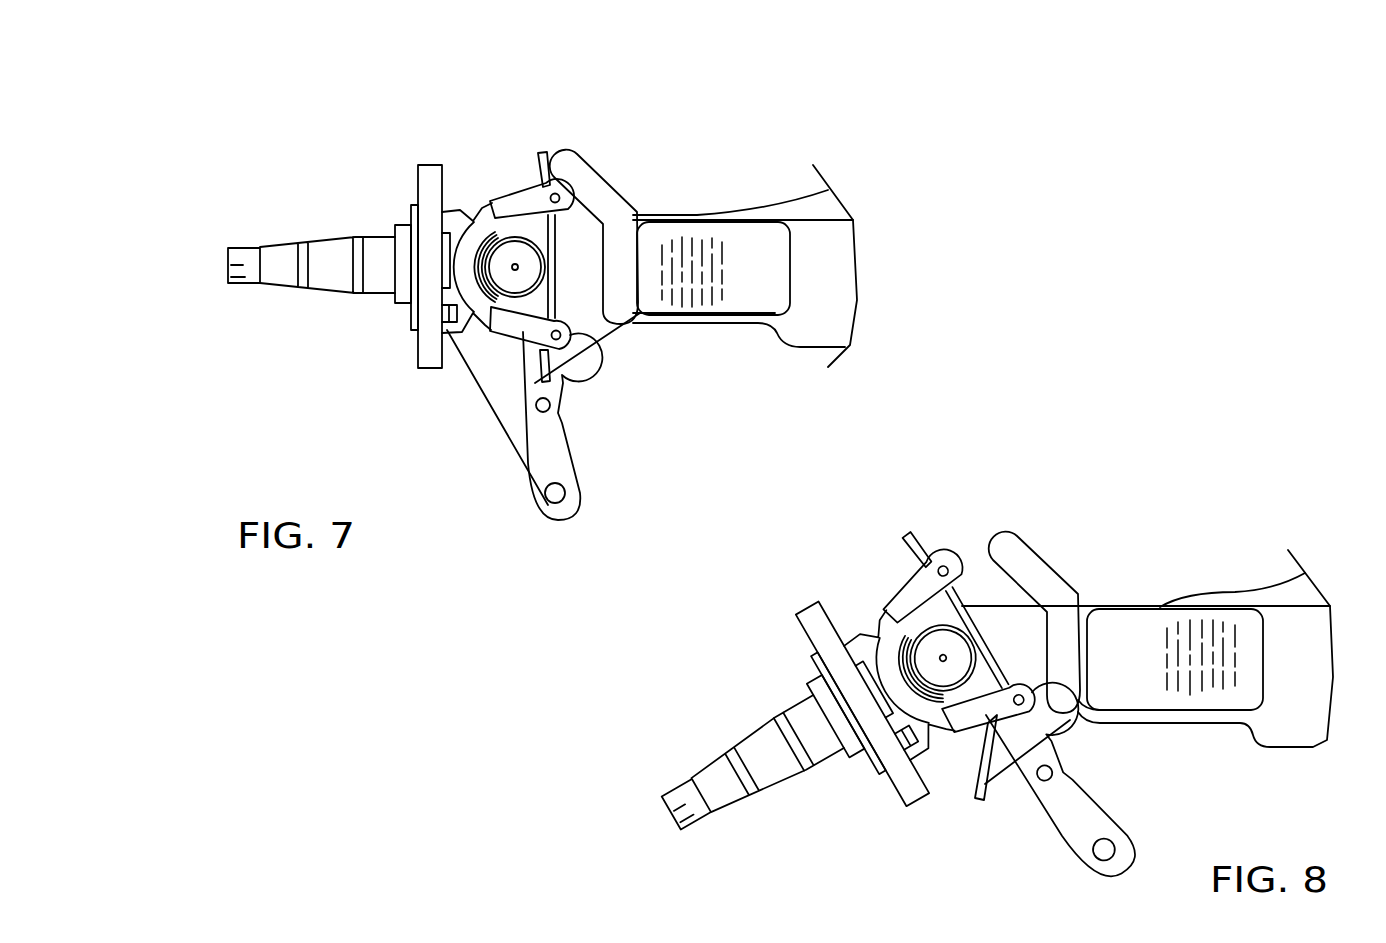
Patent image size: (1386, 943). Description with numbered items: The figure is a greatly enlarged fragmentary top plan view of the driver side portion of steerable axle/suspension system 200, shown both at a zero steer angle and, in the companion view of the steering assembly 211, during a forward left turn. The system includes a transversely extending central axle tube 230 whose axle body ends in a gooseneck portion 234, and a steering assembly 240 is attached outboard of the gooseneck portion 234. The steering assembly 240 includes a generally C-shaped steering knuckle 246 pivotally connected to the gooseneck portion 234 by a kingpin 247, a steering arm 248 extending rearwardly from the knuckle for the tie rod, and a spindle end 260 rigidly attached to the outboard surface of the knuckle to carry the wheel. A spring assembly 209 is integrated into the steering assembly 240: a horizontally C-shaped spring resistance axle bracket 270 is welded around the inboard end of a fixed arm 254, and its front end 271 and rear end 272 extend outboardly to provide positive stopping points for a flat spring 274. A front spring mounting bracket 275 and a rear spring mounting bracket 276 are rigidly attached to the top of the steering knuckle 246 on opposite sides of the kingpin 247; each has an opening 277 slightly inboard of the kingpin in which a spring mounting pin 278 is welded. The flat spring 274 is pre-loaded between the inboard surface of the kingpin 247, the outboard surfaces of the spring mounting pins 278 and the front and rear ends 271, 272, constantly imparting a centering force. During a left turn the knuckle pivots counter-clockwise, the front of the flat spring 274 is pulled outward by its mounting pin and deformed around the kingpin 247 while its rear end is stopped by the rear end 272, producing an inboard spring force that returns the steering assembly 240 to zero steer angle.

In FIG. 7, the steerable axle/suspension system 200 is at (327, 94).
In FIG. 7, the spring assembly 209 is at (511, 128).
In FIG. 8, the clamp assembly 211 is at (968, 518).
In FIG. 7, the central axle tube 230 is at (807, 317).
In FIG. 8, the central axle tube 230 is at (1295, 728).
In FIG. 7, the gooseneck portion 234 is at (620, 214).
In FIG. 8, the gooseneck portion 234 is at (985, 610).
In FIG. 7, the steering assembly 240 is at (412, 150).
In FIG. 8, the steering assembly 240 is at (880, 540).
In FIG. 7, the steering knuckle 246 is at (453, 290).
In FIG. 8, the steering knuckle 246 is at (878, 620).
In FIG. 7, the kingpin 247 is at (500, 285).
In FIG. 8, the kingpin 247 is at (928, 672).
In FIG. 7, the steering arm 248 is at (518, 435).
In FIG. 7, the fixed arm 254 is at (657, 300).
In FIG. 8, the fixed arm 254 is at (1170, 695).
In FIG. 7, the spindle end 260 is at (328, 292).
In FIG. 8, the spindle end 260 is at (760, 733).
In FIG. 7, the spring resistance axle bracket 270 is at (637, 188).
In FIG. 8, the spring resistance axle bracket 270 is at (1072, 577).
In FIG. 7, the front end 271 is at (583, 167).
In FIG. 8, the front end 271 is at (1023, 543).
In FIG. 7, the rear end 272 is at (568, 373).
In FIG. 8, the rear end 272 is at (1008, 720).
In FIG. 7, the flat spring 274 is at (538, 165).
In FIG. 8, the flat spring 274 is at (970, 778).
In FIG. 7, the front spring mounting bracket 275 is at (555, 198).
In FIG. 8, the front spring mounting bracket 275 is at (947, 557).
In FIG. 7, the rear spring mounting bracket 276 is at (522, 332).
In FIG. 8, the rear spring mounting bracket 276 is at (993, 737).
In FIG. 7, the opening 277 is at (558, 203).
In FIG. 8, the opening 277 is at (942, 568).
In FIG. 7, the spring mounting pin 278 is at (520, 213).
In FIG. 8, the spring mounting pin 278 is at (957, 572).